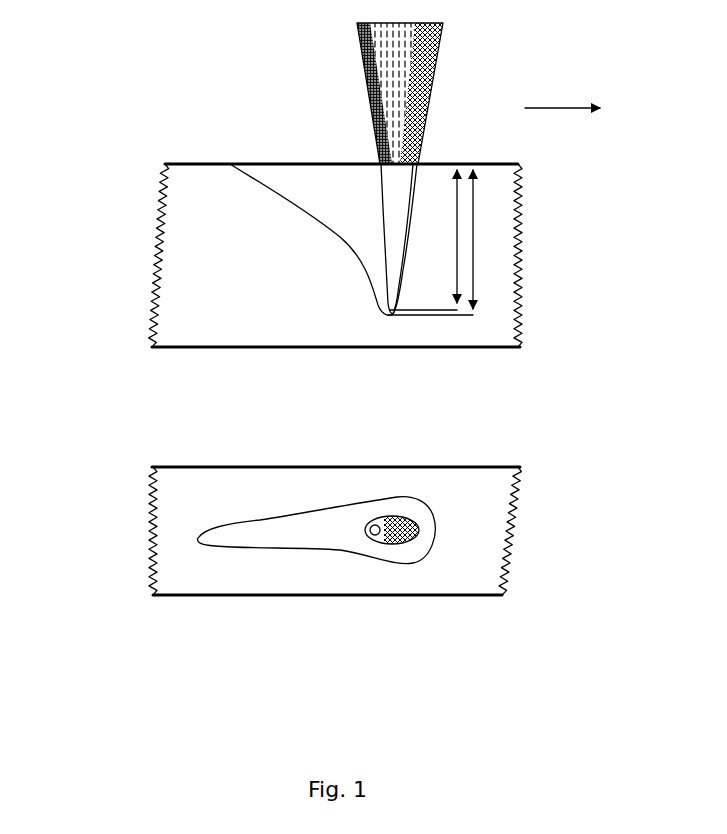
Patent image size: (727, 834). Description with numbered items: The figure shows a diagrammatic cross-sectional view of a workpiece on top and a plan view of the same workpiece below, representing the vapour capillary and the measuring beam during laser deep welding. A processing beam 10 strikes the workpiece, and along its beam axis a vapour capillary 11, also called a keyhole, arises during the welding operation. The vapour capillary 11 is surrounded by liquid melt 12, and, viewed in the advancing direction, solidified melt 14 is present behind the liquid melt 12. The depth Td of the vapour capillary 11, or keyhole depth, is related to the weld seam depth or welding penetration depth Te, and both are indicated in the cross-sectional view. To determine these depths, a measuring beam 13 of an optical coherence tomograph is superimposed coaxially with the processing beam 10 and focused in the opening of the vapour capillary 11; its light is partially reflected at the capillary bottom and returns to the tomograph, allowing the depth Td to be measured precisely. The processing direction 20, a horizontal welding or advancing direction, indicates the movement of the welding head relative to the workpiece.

The processing beam 10 is at (443, 38).
The vapour capillary 11 is at (380, 181).
The liquid melt 12 is at (300, 187).
The measuring beam 13 is at (378, 62).
The solidified melt 14 is at (198, 257).
The processing direction 20 is at (565, 108).
The depth of the vapour capillary Td is at (457, 261).
The welding penetration depth Te is at (473, 238).